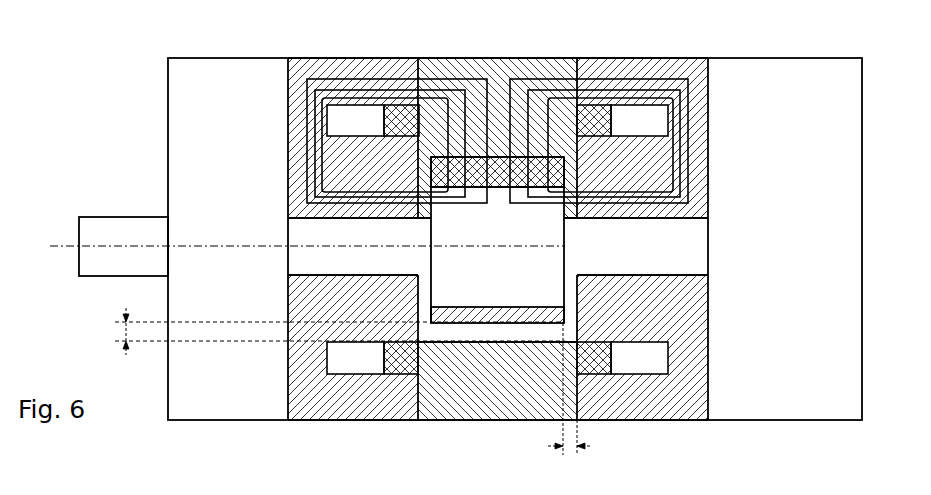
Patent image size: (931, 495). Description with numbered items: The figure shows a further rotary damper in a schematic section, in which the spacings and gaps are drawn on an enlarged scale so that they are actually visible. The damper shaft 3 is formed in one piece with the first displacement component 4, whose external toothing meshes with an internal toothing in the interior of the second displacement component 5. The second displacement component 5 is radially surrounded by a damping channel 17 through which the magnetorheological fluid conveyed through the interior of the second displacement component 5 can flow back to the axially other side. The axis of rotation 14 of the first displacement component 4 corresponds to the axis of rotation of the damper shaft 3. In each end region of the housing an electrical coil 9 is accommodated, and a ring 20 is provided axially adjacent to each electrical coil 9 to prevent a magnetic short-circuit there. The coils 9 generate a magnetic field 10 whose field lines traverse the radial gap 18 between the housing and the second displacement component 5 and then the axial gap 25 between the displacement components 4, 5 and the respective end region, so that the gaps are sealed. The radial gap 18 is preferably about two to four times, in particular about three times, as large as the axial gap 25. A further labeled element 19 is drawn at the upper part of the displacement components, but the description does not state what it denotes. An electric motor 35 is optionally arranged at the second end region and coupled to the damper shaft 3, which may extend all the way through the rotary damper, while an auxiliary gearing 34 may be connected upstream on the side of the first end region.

The damper shaft 3 is at (382, 218).
The first displacement component 4 is at (487, 290).
The second displacement component 5 is at (520, 313).
The electrical coil 9 is at (359, 114).
The magnetic field 10 is at (527, 78).
The axis of rotation 14 is at (368, 247).
The damping channel 17 is at (477, 338).
The radial gap 18 is at (122, 333).
The rotor upper ring 19 is at (487, 245).
The ring 20 is at (403, 114).
The axial gap 25 is at (577, 452).
The auxiliary gearing 34 is at (237, 77).
The electric motor 35 is at (760, 79).